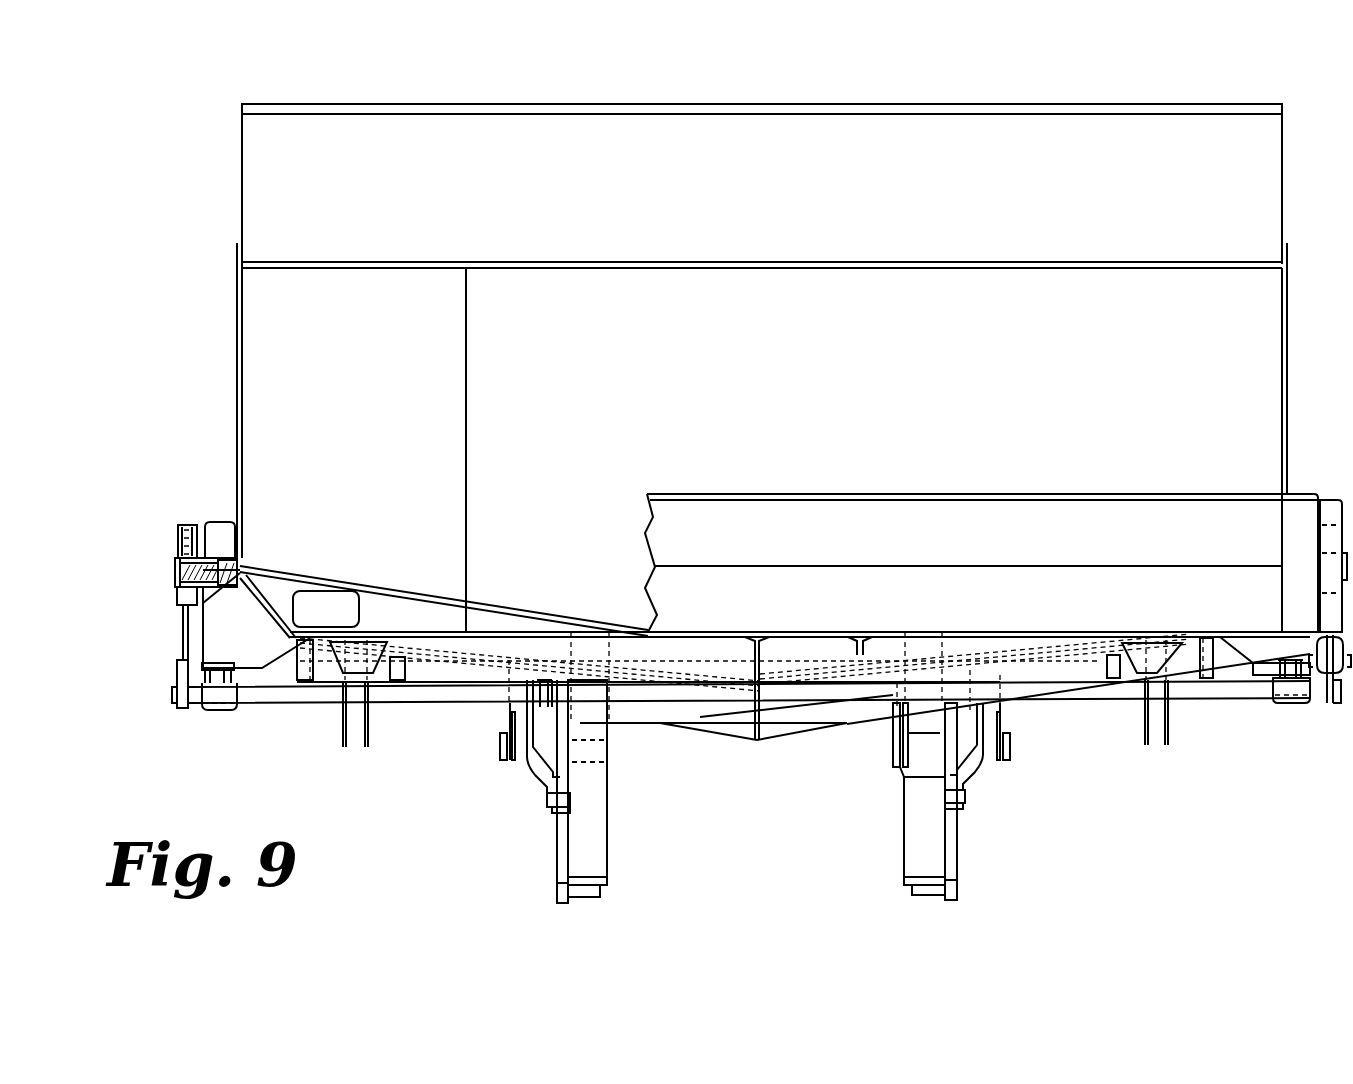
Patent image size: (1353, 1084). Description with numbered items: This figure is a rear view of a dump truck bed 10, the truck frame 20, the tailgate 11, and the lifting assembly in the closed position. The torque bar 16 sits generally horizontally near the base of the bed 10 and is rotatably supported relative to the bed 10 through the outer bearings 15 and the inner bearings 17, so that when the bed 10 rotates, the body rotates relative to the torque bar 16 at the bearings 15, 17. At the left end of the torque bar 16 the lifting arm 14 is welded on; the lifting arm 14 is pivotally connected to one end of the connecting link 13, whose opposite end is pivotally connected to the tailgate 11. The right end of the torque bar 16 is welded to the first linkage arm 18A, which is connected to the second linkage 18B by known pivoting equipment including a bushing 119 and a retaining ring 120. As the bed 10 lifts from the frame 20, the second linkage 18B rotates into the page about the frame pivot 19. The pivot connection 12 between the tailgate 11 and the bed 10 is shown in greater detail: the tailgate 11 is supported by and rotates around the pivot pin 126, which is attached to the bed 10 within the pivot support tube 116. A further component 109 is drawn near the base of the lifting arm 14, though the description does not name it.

The bed 10 is at (1278, 327).
The tailgate 11 is at (1273, 517).
The pivot connection 12 is at (176, 552).
The connecting link 13 is at (182, 627).
The lifting arm 14 is at (177, 672).
The outer bearings 15 is at (238, 705).
The torque bar 16 is at (297, 704).
The inner bearings 17 is at (551, 678).
The first linkage arm 18A is at (527, 765).
The second linkage 18B is at (557, 876).
The frame pivot 19 is at (557, 894).
The frame 20 is at (607, 830).
The block 109 is at (217, 710).
The pivot support tube 116 is at (212, 558).
The bushing 119 is at (552, 811).
The retaining ring 120 is at (547, 800).
The pivot pin 126 is at (242, 572).